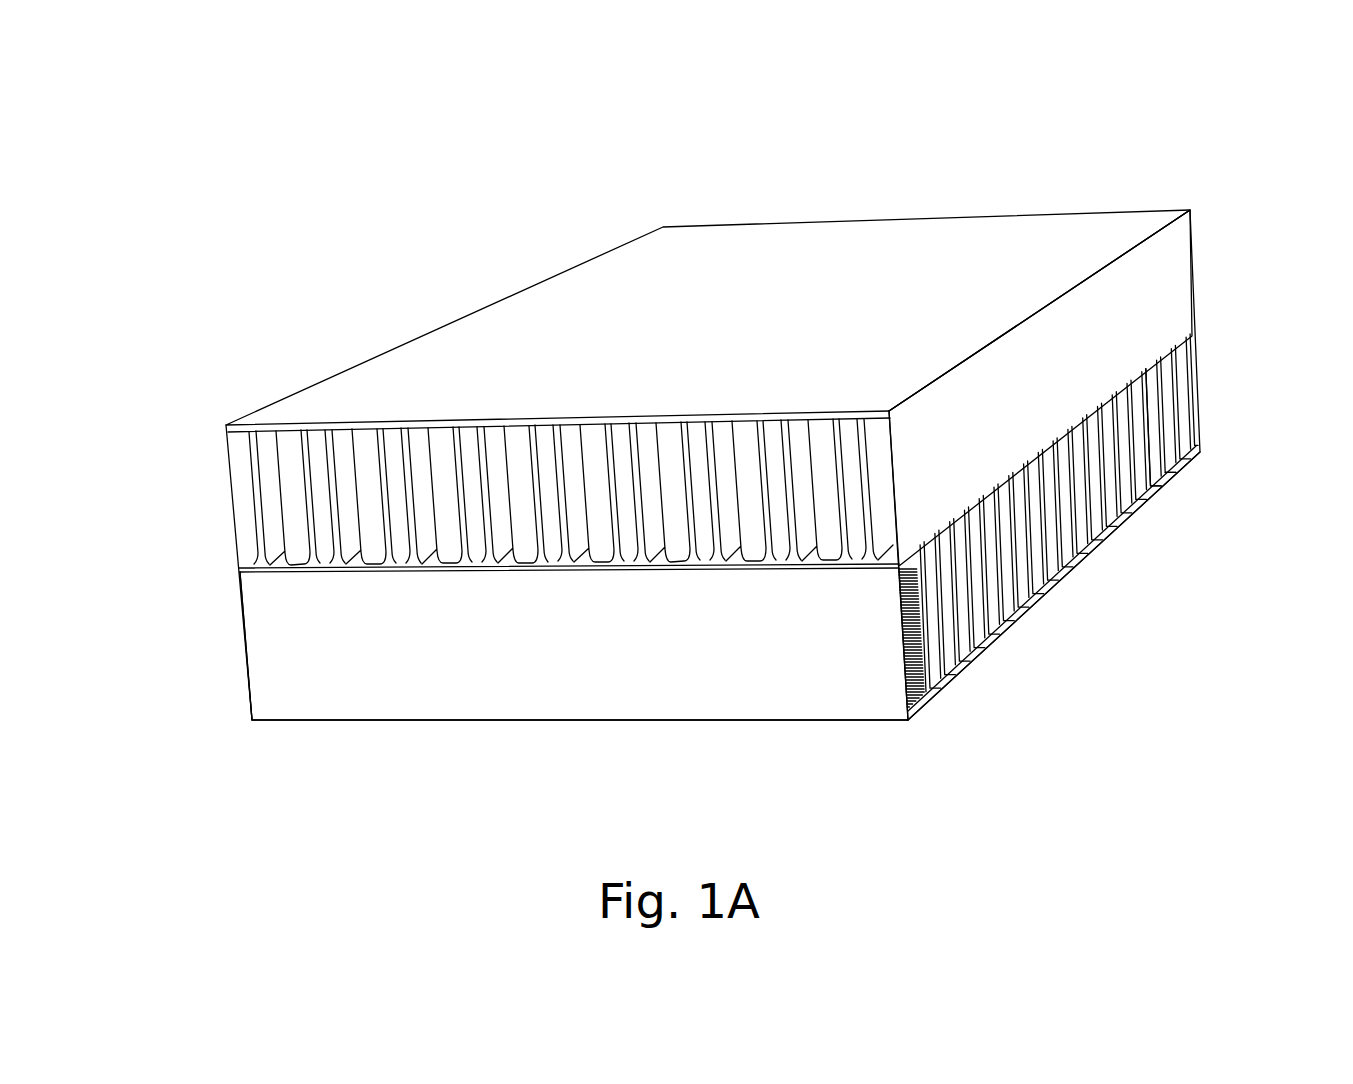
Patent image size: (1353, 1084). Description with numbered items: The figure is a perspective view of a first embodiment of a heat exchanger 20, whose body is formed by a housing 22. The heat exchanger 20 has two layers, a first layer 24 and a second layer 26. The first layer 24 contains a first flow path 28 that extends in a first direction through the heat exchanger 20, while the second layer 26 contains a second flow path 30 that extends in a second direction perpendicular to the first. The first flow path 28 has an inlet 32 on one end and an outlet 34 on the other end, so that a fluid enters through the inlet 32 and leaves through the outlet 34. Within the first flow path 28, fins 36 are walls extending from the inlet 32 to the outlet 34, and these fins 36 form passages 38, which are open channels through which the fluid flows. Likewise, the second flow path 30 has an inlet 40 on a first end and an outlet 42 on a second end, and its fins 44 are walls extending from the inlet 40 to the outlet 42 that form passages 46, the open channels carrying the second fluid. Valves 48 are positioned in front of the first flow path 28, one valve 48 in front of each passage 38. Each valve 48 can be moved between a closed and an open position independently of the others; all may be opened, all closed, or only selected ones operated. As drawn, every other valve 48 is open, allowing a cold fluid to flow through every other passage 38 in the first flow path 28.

The heat exchanger 20 is at (331, 187).
The housing 22 is at (866, 278).
The first layer 24 is at (1130, 307).
The second layer 26 is at (745, 705).
The first flow path 28 is at (204, 508).
The second flow path 30 is at (1212, 371).
The inlet 32 is at (490, 582).
The outlet 34 is at (1015, 196).
The fins 36 is at (347, 452).
The passages 38 is at (338, 476).
The inlet 40 is at (1090, 580).
The outlet 42 is at (234, 640).
The fins 44 is at (1157, 462).
The passages 46 is at (1187, 428).
The valves 48 is at (517, 430).